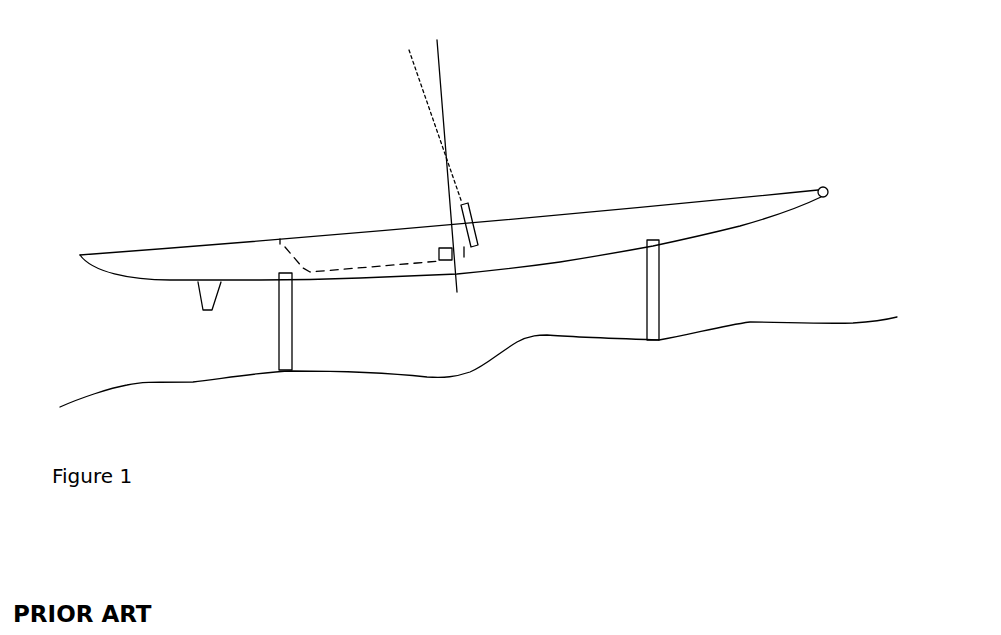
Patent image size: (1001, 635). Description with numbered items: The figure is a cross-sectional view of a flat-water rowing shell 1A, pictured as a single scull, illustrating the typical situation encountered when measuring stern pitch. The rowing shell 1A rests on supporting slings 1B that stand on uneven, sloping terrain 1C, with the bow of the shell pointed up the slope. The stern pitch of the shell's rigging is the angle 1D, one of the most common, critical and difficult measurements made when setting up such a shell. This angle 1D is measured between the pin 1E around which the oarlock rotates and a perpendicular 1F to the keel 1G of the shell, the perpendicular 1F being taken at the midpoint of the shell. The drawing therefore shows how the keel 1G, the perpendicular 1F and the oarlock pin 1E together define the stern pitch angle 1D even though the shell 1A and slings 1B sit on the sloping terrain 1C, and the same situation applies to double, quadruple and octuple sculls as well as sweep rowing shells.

The rowing shell 1A is at (727, 218).
The slings 1B is at (280, 348).
The uneven terrain 1C is at (715, 330).
The angle 1D is at (388, 80).
The pin 1E is at (472, 205).
The perpendicular 1F is at (443, 122).
The keel 1G is at (418, 260).